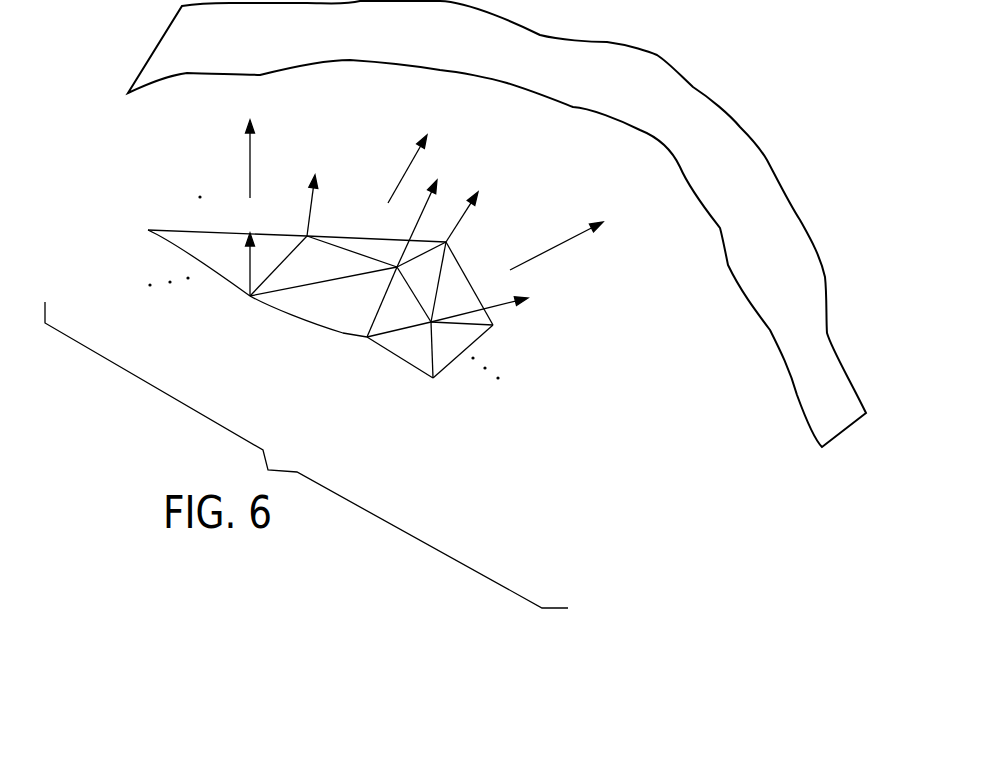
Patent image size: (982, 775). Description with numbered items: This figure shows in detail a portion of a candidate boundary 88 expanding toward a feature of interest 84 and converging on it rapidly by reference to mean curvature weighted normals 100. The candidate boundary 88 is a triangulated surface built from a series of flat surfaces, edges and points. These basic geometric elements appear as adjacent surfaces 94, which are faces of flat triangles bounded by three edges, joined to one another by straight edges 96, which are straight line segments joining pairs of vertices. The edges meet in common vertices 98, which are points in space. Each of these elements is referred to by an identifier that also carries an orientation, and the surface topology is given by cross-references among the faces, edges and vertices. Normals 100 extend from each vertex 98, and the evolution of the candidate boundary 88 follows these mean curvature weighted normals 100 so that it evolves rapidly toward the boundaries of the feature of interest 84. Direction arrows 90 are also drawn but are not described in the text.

The feature of interest 84 is at (700, 115).
The candidate boundary 88 is at (442, 402).
The direction arrows 90 is at (252, 157).
The adjacent surfaces 94 is at (228, 273).
The straight edges 96 is at (273, 275).
The common vertices 98 is at (305, 234).
The mean curvature weighted normals 100 is at (249, 256).